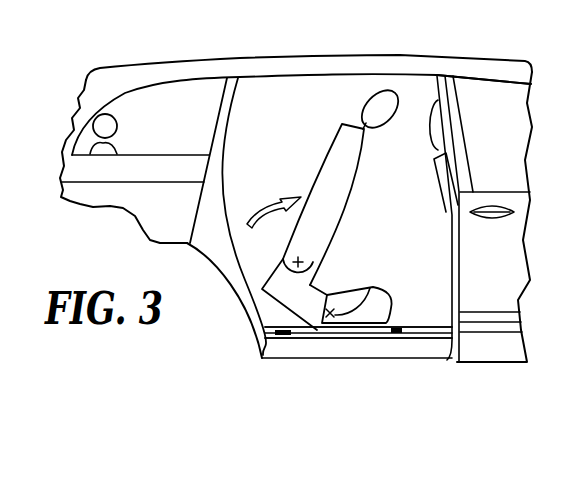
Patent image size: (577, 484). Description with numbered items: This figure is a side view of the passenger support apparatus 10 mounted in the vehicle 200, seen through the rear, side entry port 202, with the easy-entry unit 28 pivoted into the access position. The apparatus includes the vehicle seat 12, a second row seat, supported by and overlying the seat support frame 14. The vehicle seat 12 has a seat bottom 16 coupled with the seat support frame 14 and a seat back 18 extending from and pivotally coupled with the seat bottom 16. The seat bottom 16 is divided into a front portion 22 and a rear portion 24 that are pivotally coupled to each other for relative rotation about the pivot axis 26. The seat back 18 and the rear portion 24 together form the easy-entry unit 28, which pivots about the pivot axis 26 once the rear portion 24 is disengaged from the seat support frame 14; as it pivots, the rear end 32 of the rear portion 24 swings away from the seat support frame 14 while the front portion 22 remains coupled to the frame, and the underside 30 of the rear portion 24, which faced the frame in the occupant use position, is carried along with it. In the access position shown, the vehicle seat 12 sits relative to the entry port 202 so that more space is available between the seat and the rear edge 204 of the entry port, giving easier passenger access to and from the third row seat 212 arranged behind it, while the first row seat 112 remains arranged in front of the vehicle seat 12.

The passenger support apparatus 10 is at (339, 176).
The vehicle seat 12 is at (388, 98).
The seat support frame 14 is at (402, 327).
The seat bottom 16 is at (333, 293).
The seat back 18 is at (326, 162).
The front portion 22 is at (362, 320).
The rear portion 24 is at (317, 320).
The pivot axis 26 is at (370, 288).
The easy-entry unit 28 is at (351, 219).
The underside 30 is at (285, 313).
The rear end 32 is at (267, 297).
The first row seat 112 is at (433, 127).
The vehicle 200 is at (125, 78).
The rear, side entry port 202 is at (315, 102).
The rear edge 204 is at (227, 240).
The third row seat 212 is at (107, 120).